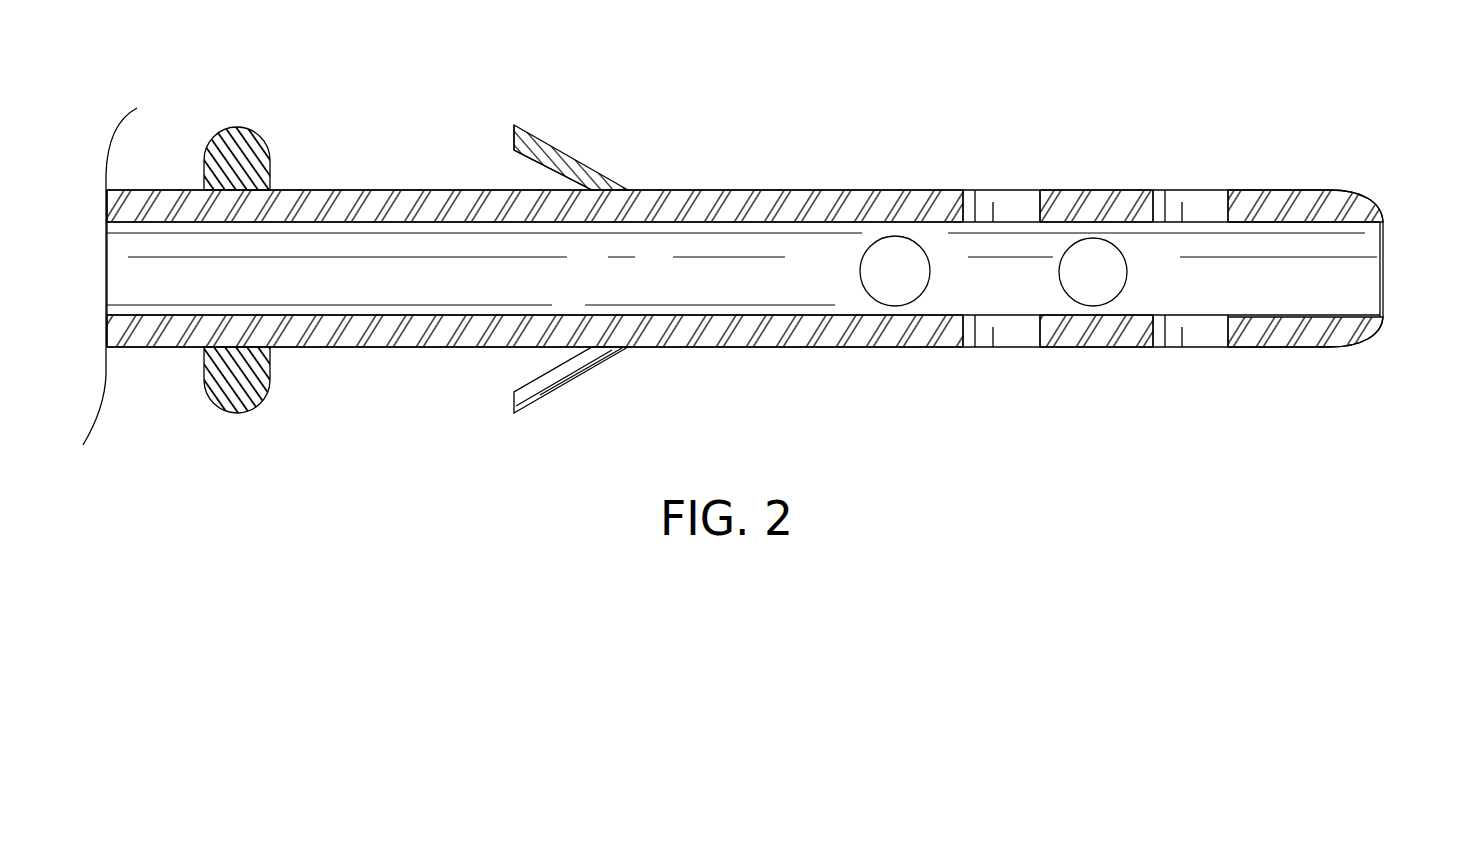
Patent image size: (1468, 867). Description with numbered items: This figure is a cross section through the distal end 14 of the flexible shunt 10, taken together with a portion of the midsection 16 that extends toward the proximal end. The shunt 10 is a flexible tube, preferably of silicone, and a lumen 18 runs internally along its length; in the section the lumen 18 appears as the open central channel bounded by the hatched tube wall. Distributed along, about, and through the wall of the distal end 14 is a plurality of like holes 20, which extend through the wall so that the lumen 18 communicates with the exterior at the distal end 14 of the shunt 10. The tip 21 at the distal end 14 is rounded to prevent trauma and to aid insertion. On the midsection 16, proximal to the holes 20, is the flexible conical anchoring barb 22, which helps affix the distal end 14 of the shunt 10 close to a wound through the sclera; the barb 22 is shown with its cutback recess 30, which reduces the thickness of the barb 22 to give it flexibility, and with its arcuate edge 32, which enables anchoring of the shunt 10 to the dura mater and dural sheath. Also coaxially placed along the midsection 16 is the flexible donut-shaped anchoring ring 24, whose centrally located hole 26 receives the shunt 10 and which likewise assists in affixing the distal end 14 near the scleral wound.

The shunt 10 is at (786, 185).
The distal end 14 is at (731, 252).
The midsection 16 is at (745, 220).
The lumen 18 is at (781, 269).
The holes 20 is at (1072, 269).
The tip 21 is at (1379, 248).
The anchoring barb 22 is at (587, 253).
The anchoring ring 24 is at (269, 133).
The centrally located hole 26 is at (272, 281).
The cutback recess 30 is at (533, 178).
The arcuate edge 32 is at (515, 133).